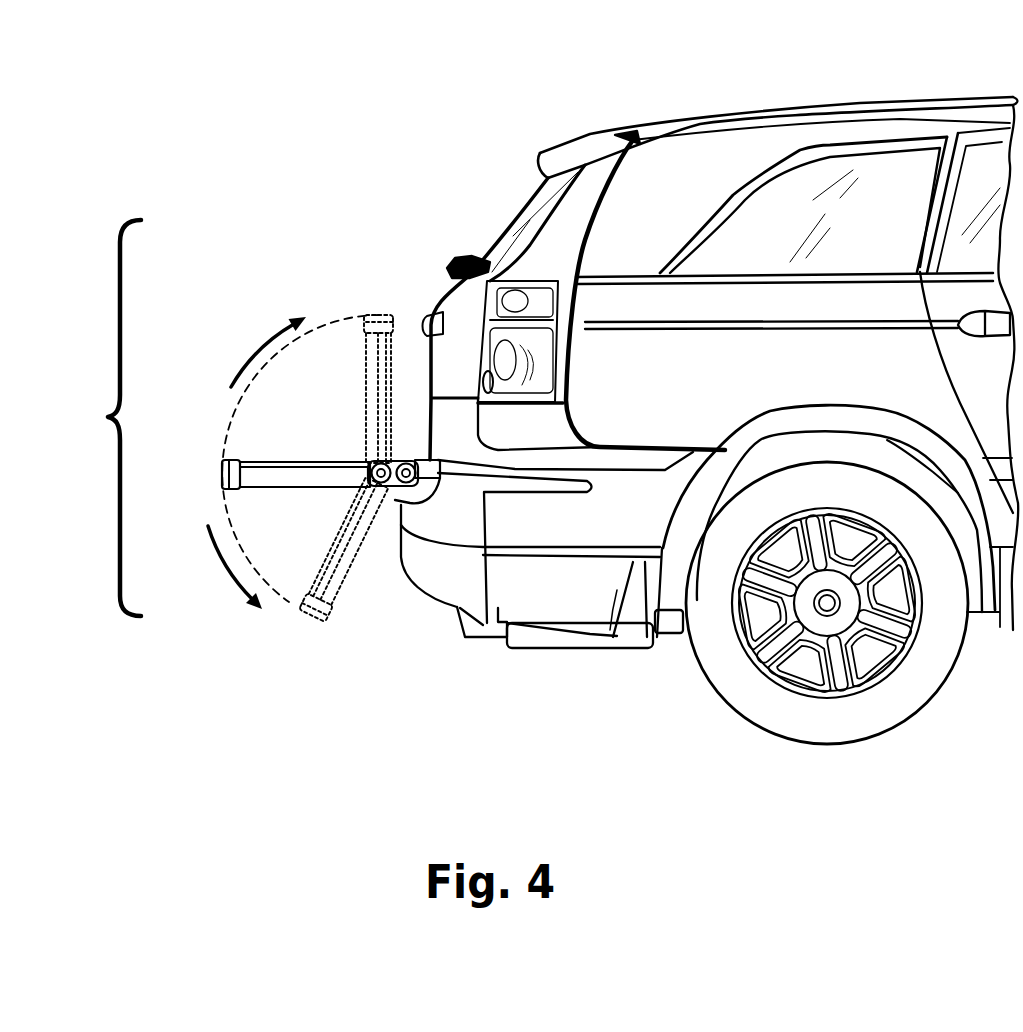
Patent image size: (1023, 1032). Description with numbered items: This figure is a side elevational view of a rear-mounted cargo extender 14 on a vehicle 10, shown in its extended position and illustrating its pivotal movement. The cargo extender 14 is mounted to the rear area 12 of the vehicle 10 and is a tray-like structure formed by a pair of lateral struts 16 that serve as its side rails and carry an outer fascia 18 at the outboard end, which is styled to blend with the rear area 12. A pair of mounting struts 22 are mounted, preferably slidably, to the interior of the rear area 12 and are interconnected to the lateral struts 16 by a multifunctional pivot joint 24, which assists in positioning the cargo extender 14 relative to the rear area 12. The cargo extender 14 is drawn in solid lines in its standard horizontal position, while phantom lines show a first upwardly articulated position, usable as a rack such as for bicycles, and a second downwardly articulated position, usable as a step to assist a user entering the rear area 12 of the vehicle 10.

The vehicle 10 is at (585, 128).
The rear area 12 is at (107, 418).
The cargo extender 14 is at (365, 306).
The lateral struts 16 is at (319, 471).
The outer fascia 18 is at (222, 470).
The mounting struts 22 is at (428, 460).
The multifunctional pivot joint 24 is at (388, 458).